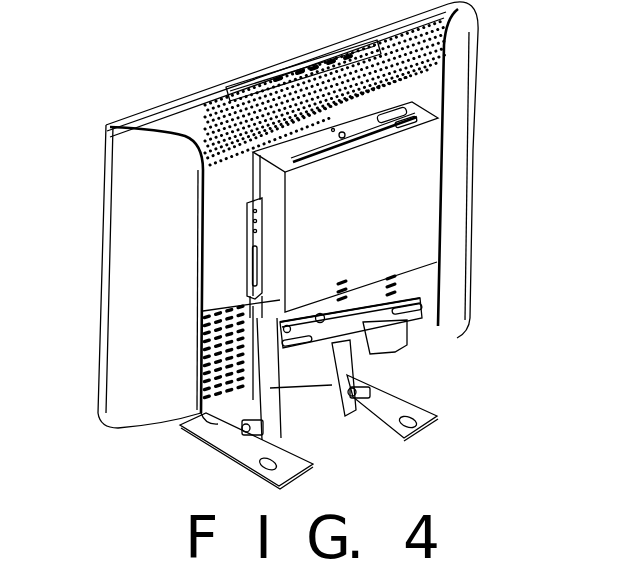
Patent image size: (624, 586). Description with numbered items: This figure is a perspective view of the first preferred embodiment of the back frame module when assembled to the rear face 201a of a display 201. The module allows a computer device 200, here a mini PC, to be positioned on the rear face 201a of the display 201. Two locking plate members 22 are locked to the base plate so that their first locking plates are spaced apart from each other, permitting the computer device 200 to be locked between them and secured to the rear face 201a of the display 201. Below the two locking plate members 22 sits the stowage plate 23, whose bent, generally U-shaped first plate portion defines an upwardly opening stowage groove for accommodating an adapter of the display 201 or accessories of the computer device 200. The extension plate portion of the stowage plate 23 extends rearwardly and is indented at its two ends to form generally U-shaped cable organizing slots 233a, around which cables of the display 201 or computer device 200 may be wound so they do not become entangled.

The computer device 200 is at (420, 203).
The display 201 is at (251, 86).
The rear face 201a is at (225, 180).
The locking plate member 22 is at (257, 230).
The stowage plate 23 is at (394, 345).
The cable organizing slot 233a is at (418, 298).